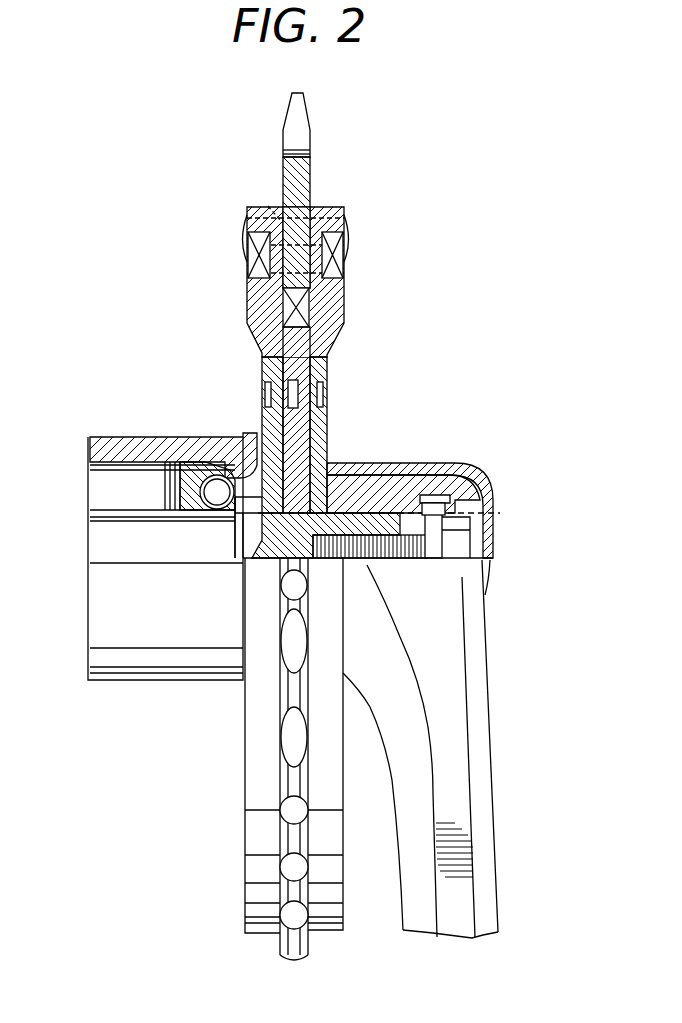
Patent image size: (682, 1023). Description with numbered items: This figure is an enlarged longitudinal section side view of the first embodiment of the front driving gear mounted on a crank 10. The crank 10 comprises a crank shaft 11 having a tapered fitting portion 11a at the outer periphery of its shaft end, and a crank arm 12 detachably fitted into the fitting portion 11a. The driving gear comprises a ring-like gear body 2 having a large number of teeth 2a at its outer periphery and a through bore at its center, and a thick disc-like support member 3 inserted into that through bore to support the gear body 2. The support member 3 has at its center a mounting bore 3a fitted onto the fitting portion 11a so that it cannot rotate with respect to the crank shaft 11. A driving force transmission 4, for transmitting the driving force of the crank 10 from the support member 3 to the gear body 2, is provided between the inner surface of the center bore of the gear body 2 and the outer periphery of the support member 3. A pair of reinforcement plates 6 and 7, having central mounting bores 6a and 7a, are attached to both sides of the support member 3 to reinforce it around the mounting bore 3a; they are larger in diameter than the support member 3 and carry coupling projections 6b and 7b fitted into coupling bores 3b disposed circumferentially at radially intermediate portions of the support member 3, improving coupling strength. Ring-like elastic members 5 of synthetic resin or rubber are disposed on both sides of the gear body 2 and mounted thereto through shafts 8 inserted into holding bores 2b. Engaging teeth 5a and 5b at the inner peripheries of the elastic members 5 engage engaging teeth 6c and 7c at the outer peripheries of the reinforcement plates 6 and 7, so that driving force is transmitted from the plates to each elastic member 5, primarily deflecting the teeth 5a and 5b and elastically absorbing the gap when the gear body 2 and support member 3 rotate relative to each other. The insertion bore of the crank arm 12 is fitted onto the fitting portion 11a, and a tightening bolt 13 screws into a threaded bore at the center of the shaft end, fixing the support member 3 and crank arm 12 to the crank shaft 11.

The gear body 2 is at (312, 170).
The teeth 2a is at (305, 126).
The holding bores 2b is at (268, 204).
The support member 3 is at (312, 357).
The mounting bore 3a is at (262, 547).
The coupling bores 3b is at (288, 386).
The driving force transmission 4 is at (306, 307).
The elastic member 5 is at (338, 208).
The engaging teeth 5a is at (252, 258).
The engaging teeth 5b is at (340, 258).
The reinforcement plate 6 is at (262, 425).
The mounting bore 6a is at (258, 520).
The coupling projections 6b is at (270, 397).
The engaging teeth 6c is at (248, 273).
The reinforcement plate 7 is at (328, 432).
The mounting bore 7a is at (330, 560).
The coupling projections 7b is at (322, 397).
The engaging teeth 7c is at (344, 273).
The shafts 8 is at (245, 226).
The crank 10 is at (496, 469).
The crank shaft 11 is at (128, 512).
The fitting portion 11a is at (383, 512).
The crank arm 12 is at (483, 728).
The tightening bolt 13 is at (435, 522).